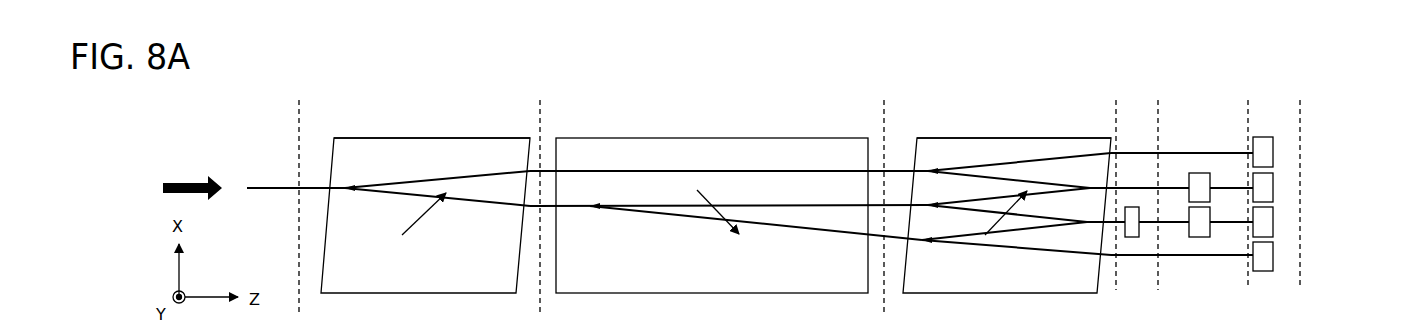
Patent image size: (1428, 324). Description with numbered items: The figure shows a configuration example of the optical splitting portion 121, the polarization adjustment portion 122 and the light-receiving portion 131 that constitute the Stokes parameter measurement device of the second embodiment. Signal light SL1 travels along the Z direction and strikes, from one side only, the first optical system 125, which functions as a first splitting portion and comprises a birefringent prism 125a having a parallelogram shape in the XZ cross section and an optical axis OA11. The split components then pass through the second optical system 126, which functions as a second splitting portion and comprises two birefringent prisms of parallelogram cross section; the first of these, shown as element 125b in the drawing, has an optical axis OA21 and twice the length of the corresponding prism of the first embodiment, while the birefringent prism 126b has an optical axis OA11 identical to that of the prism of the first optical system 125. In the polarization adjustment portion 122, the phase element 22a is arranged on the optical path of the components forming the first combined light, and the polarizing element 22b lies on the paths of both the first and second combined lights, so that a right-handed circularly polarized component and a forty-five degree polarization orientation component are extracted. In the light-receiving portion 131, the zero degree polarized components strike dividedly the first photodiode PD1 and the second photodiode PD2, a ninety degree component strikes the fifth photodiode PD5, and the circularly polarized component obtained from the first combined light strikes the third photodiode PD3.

The optical splitting portion 121 is at (1103, 60).
The polarization adjustment portion 122 is at (1234, 60).
The first optical system 125 is at (368, 106).
The birefringent prism 125a is at (428, 138).
The second birefringent element 125b is at (686, 138).
The second optical system 126 is at (1012, 126).
The birefringent prism 126b is at (930, 138).
The light-receiving portion 131 is at (1278, 118).
The phase element 22a is at (1131, 238).
The polarizing element 22b is at (1200, 173).
The signal light SL1 is at (262, 187).
The optical axis OA11 is at (420, 225).
The optical axis OA21 is at (715, 215).
The second photodiode PD2 is at (1273, 152).
The first photodiode PD1 is at (1273, 188).
The third photodiode PD3 is at (1273, 222).
The fifth photodiode PD5 is at (1273, 255).